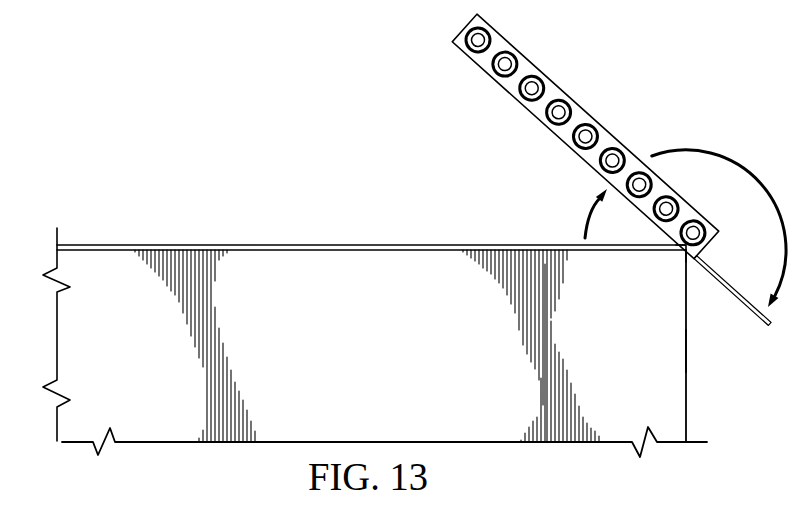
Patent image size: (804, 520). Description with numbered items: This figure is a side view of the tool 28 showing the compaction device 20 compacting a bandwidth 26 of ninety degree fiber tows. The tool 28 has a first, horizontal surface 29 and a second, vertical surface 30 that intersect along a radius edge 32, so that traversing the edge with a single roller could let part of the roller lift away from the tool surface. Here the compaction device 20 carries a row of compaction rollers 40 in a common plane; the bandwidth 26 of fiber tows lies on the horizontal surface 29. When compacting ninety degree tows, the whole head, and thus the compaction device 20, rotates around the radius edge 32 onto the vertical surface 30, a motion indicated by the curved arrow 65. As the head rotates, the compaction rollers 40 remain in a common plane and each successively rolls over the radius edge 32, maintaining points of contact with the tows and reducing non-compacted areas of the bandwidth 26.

The compaction device 20 is at (628, 162).
The compaction rollers 40 is at (603, 138).
The bandwidth 26 is at (313, 244).
The horizontal surface 29 is at (414, 240).
The tool 28 is at (686, 388).
The vertical surface 30 is at (686, 338).
The radius edge 32 is at (676, 263).
The rotation arrow 65 is at (728, 157).